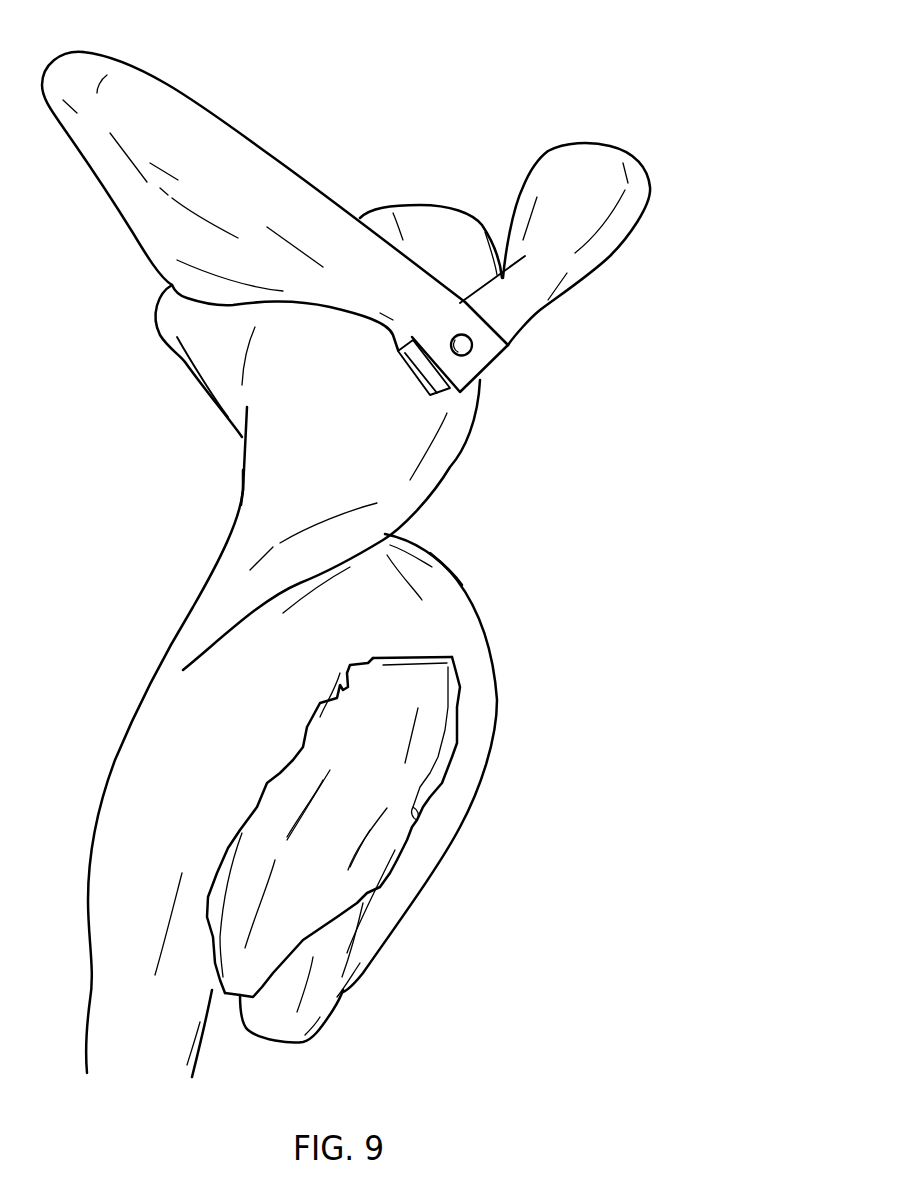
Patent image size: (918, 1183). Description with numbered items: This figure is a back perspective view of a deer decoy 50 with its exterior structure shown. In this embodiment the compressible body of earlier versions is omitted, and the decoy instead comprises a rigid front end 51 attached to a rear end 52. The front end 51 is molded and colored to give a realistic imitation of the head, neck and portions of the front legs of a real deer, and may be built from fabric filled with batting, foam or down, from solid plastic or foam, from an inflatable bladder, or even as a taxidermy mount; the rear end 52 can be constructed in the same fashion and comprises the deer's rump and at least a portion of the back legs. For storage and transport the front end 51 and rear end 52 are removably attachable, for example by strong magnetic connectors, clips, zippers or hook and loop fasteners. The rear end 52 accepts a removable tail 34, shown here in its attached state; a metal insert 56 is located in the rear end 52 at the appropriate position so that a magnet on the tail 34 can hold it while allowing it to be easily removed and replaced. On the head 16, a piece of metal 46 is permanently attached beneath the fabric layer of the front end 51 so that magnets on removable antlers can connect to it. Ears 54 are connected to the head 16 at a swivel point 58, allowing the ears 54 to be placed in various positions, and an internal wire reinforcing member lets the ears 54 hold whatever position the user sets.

The head 16 is at (218, 367).
The tail 34 is at (393, 808).
The piece of metal 46 is at (423, 217).
The deer decoy 50 is at (412, 203).
The front end 51 is at (273, 488).
The rear end 52 is at (447, 585).
The ears 54 is at (141, 95).
The metal insert 56 is at (417, 657).
The swivel point 58 is at (471, 348).